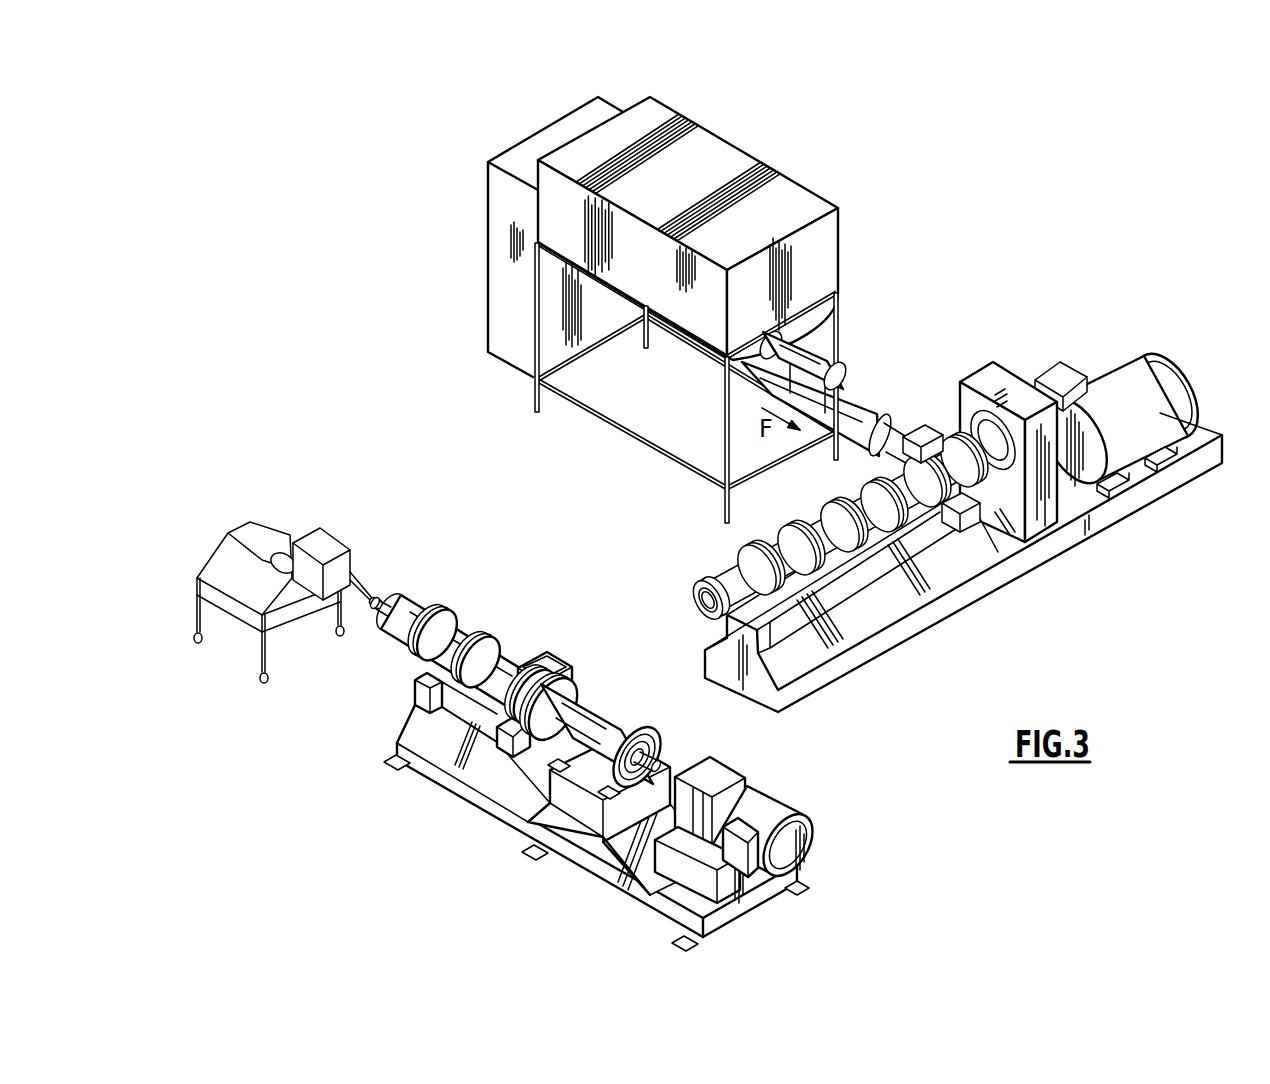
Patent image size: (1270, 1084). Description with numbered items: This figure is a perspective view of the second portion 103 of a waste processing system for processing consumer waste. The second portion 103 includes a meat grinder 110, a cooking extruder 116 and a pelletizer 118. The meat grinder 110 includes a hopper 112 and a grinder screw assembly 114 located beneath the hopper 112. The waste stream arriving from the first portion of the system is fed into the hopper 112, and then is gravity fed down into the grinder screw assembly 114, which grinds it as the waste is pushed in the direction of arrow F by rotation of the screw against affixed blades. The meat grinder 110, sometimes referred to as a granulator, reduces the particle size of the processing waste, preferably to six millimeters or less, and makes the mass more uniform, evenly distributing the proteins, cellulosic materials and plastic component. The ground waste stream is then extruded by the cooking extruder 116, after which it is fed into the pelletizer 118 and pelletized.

The second portion 103 is at (413, 222).
The meat grinder 110 is at (868, 264).
The hopper 112 is at (715, 310).
The grinder screw assembly 114 is at (885, 412).
The cooking extruder 116 is at (716, 572).
The pelletizer 118 is at (608, 712).